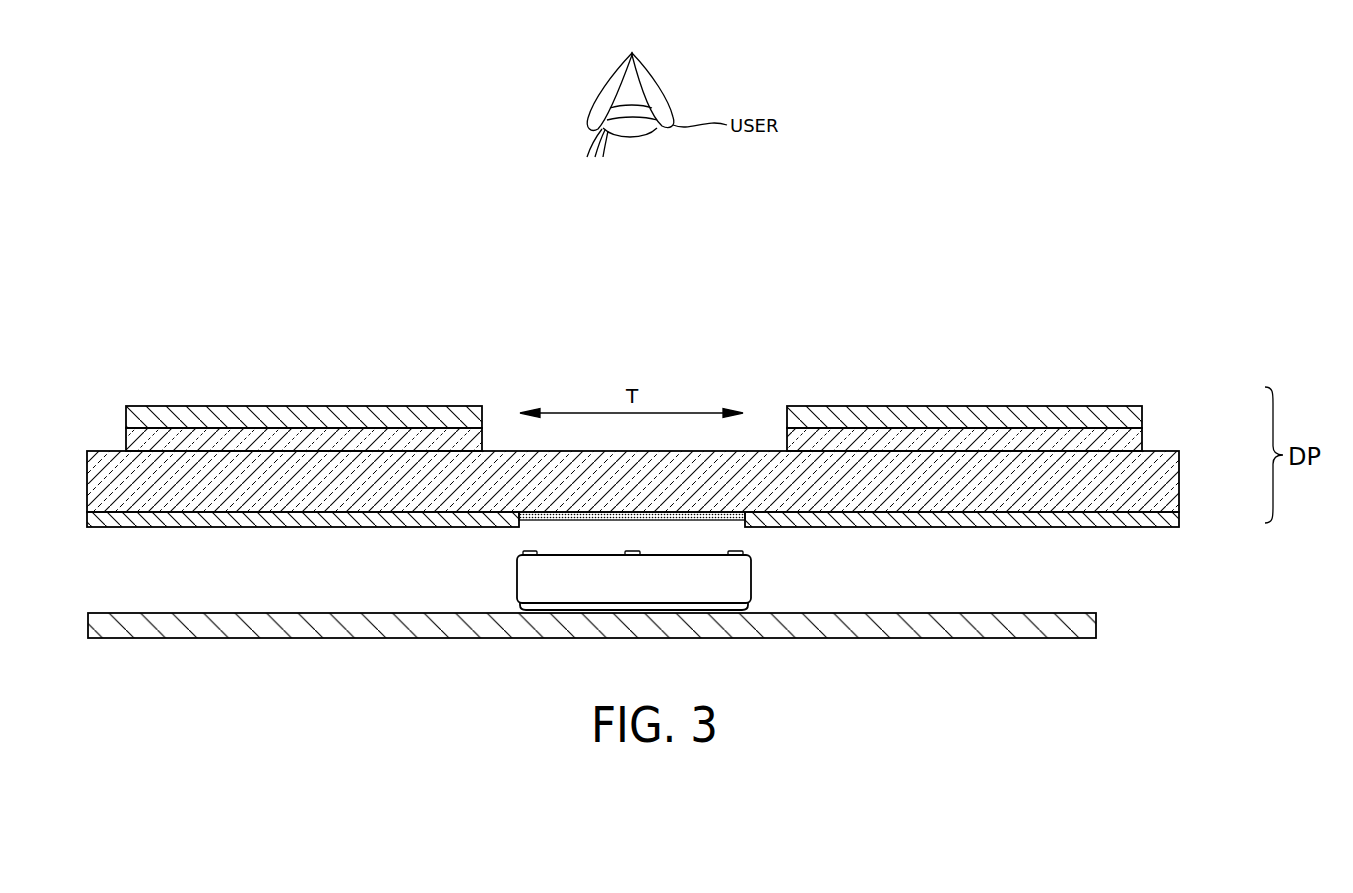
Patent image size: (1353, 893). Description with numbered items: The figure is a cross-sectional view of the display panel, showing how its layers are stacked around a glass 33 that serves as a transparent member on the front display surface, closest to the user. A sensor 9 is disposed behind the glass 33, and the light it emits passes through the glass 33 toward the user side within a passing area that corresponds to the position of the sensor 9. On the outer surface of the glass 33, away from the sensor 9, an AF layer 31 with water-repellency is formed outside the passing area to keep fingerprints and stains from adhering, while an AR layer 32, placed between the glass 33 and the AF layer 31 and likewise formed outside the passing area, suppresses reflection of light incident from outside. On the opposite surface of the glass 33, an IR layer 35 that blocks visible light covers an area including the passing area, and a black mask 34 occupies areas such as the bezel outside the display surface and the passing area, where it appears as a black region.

The sensor 9 is at (517, 572).
The AF layer 31 is at (1142, 412).
The AR layer 32 is at (1142, 443).
The glass 33 is at (1179, 489).
The black mask 34 is at (1135, 527).
The IR layer 35 is at (736, 520).